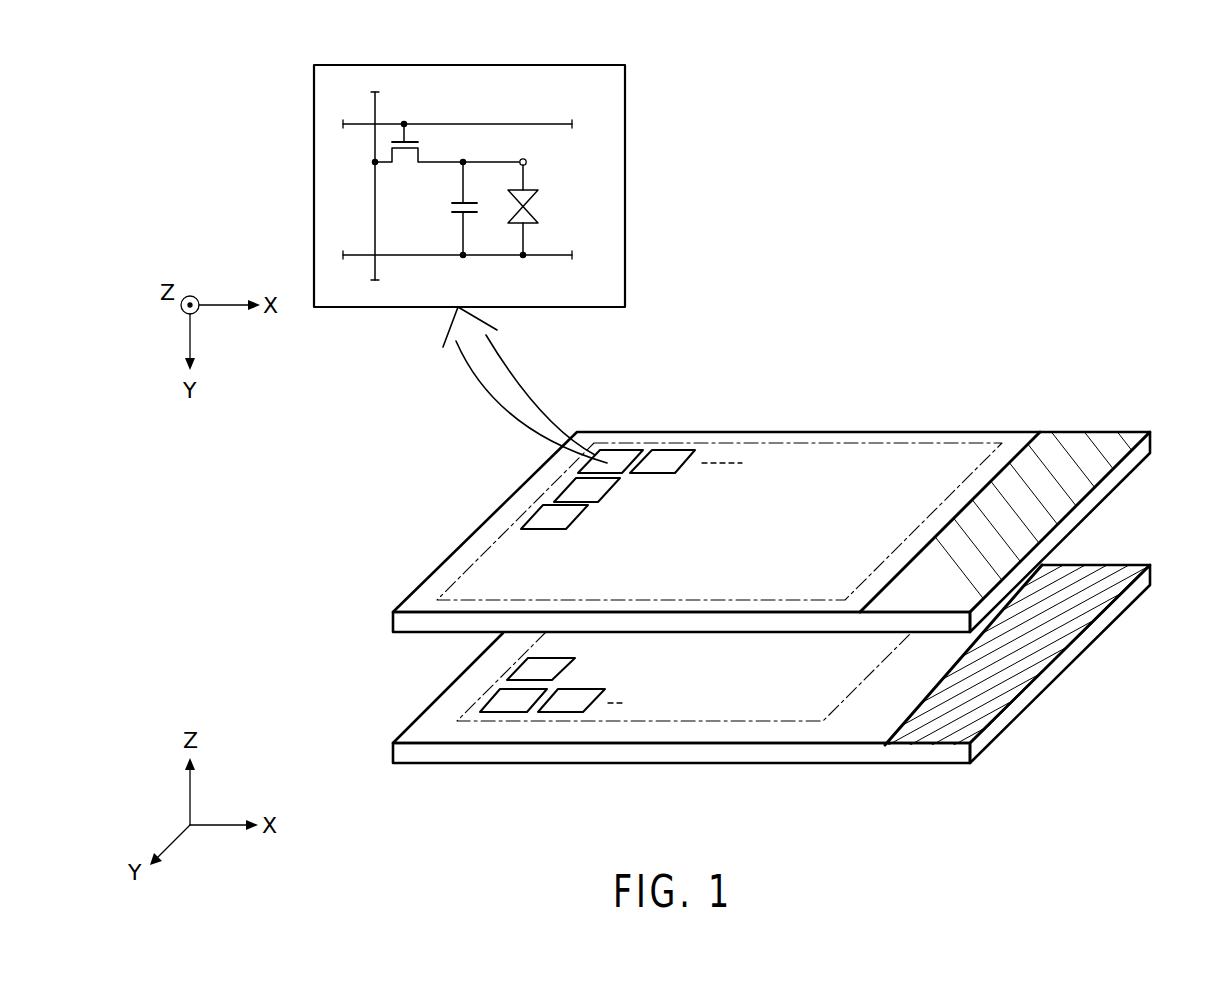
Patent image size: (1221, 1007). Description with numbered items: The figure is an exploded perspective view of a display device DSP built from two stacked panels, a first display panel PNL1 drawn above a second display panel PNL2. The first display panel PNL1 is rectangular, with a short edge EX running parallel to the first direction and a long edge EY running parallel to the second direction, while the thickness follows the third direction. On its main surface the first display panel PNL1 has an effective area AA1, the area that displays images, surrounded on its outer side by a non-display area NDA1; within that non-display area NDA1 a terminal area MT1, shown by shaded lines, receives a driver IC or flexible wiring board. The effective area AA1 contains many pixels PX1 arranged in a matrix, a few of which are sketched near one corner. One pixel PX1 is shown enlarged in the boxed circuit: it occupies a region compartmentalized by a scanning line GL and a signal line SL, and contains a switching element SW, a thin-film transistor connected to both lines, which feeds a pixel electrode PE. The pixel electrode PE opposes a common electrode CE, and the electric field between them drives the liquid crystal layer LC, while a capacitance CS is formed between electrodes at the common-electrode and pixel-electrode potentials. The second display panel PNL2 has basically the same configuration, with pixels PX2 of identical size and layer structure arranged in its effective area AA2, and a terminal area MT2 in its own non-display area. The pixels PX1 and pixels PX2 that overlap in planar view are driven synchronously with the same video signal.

The pixel PX1 is at (625, 118).
The scanning line GL is at (360, 123).
The signal line SL is at (375, 203).
The switching element SW is at (438, 148).
The pixel electrode PE is at (527, 162).
The capacitance CS is at (440, 209).
The liquid crystal layer LC is at (548, 203).
The common electrode CE is at (547, 257).
The display device DSP is at (442, 470).
The first display panel PNL1 is at (393, 621).
The effective area AA1 is at (750, 442).
The non-display area NDA1 is at (917, 442).
The terminal area MT1 is at (1073, 443).
The short edge EX is at (1140, 472).
The second display panel PNL2 is at (393, 756).
The effective area AA2 is at (460, 714).
The pixel PX2 is at (527, 672).
The terminal area MT2 is at (1098, 588).
The long edge EY is at (729, 638).